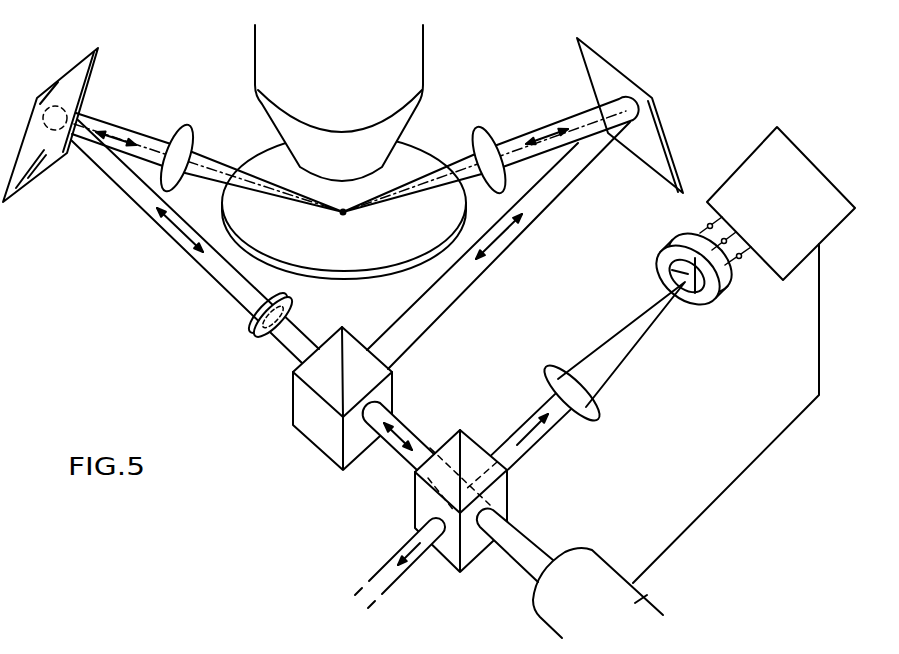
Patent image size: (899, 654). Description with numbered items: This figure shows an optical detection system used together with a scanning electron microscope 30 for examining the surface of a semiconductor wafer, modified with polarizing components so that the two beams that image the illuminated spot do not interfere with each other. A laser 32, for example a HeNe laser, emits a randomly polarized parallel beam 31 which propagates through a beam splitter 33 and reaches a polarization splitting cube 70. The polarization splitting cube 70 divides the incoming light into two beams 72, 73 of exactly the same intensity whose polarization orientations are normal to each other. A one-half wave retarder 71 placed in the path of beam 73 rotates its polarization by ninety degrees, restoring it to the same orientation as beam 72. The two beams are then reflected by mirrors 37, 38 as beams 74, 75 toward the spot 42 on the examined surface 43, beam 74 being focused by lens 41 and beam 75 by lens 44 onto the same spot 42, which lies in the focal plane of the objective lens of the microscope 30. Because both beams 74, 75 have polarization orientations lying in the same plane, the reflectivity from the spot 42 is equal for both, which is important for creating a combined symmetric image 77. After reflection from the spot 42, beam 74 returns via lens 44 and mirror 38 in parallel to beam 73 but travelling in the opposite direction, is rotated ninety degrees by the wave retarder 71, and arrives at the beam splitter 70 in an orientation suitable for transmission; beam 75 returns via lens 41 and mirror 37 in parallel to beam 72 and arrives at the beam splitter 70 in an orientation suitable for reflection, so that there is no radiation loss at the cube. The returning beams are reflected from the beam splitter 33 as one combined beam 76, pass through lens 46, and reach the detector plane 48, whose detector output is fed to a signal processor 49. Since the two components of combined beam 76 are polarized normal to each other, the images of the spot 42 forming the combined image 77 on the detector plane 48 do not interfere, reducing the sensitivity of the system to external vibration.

The scanning electron microscope 30 is at (423, 60).
The parallel beam 31 is at (538, 548).
The laser 32 is at (650, 597).
The beam splitter 33 is at (477, 540).
The mirror 37 is at (630, 84).
The mirror 38 is at (82, 76).
The lens 41 is at (473, 130).
The spot 42 is at (350, 225).
The examined surface 43 is at (350, 256).
The lens 44 is at (180, 133).
The lens 46 is at (558, 377).
The detector plane 48 is at (713, 297).
The signal processor 49 is at (750, 163).
The polarization splitting cube 70 is at (360, 432).
The one-half wave retarder 71 is at (249, 327).
The beam 72 is at (503, 248).
The beam 73 is at (182, 242).
The beam 74 is at (522, 138).
The beam 75 is at (133, 138).
The combined beam 76 is at (507, 453).
The combined symmetric image 77 is at (688, 272).